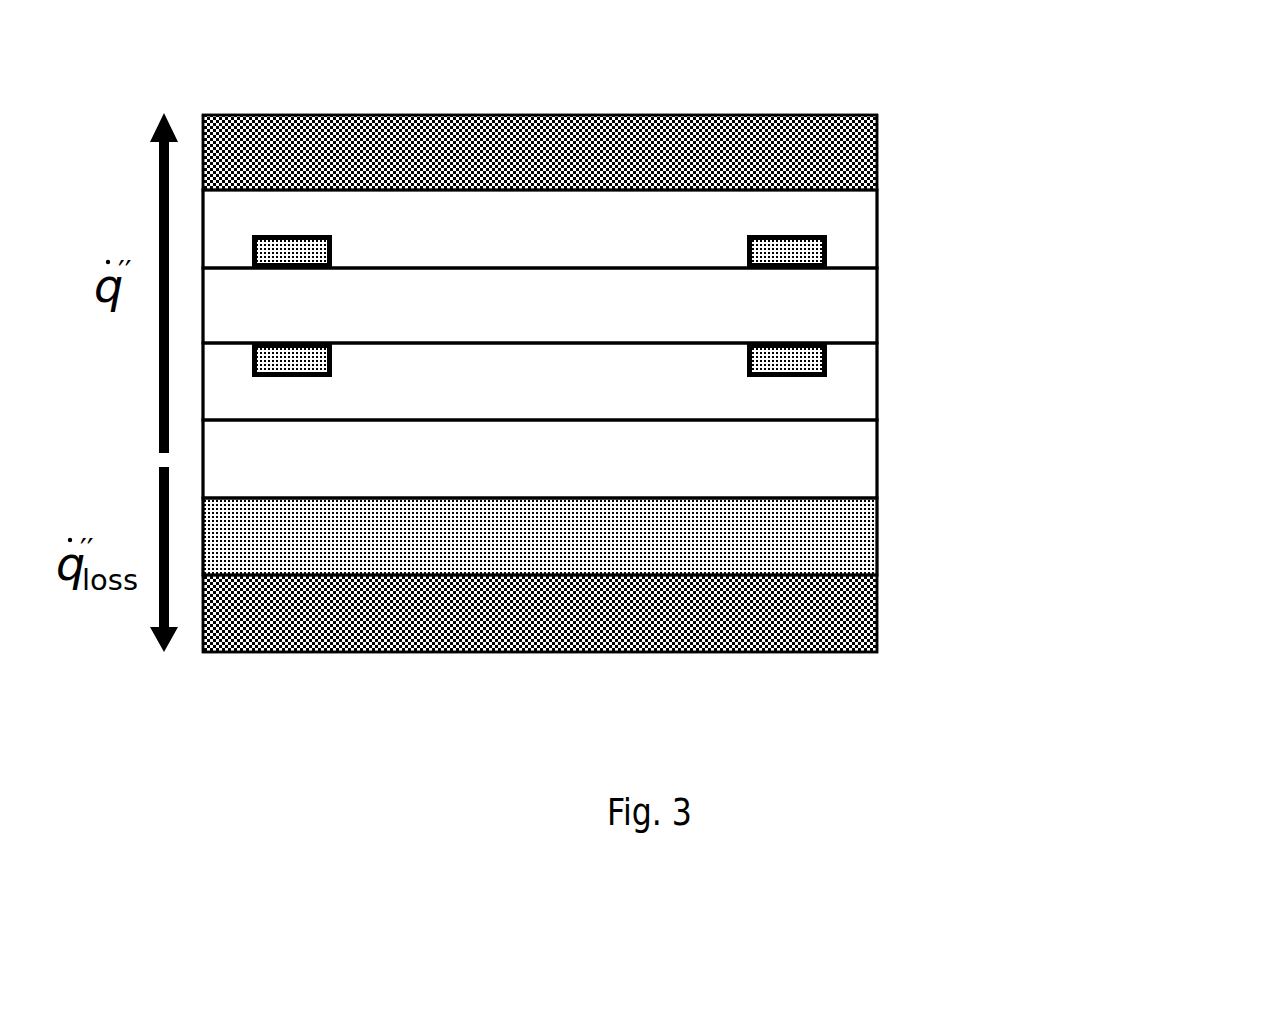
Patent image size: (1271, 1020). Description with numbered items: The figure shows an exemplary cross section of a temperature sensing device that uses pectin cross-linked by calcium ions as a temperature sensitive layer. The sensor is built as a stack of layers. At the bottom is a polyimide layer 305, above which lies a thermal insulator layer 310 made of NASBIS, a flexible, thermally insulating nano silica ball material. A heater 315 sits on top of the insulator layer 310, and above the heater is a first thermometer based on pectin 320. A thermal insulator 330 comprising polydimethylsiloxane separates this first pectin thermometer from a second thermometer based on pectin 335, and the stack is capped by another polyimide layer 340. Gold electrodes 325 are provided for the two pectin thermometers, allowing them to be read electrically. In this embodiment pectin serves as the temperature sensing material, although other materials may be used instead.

The polyimide layer 305 is at (881, 663).
The thermal insulator layer 310 is at (910, 543).
The heater 315 is at (881, 472).
The thermometer based on pectin 320 is at (895, 398).
The gold electrodes 325 is at (795, 360).
The thermal insulator 330 is at (247, 302).
The thermometer based on pectin 335 is at (863, 210).
The polyimide layer 340 is at (832, 96).